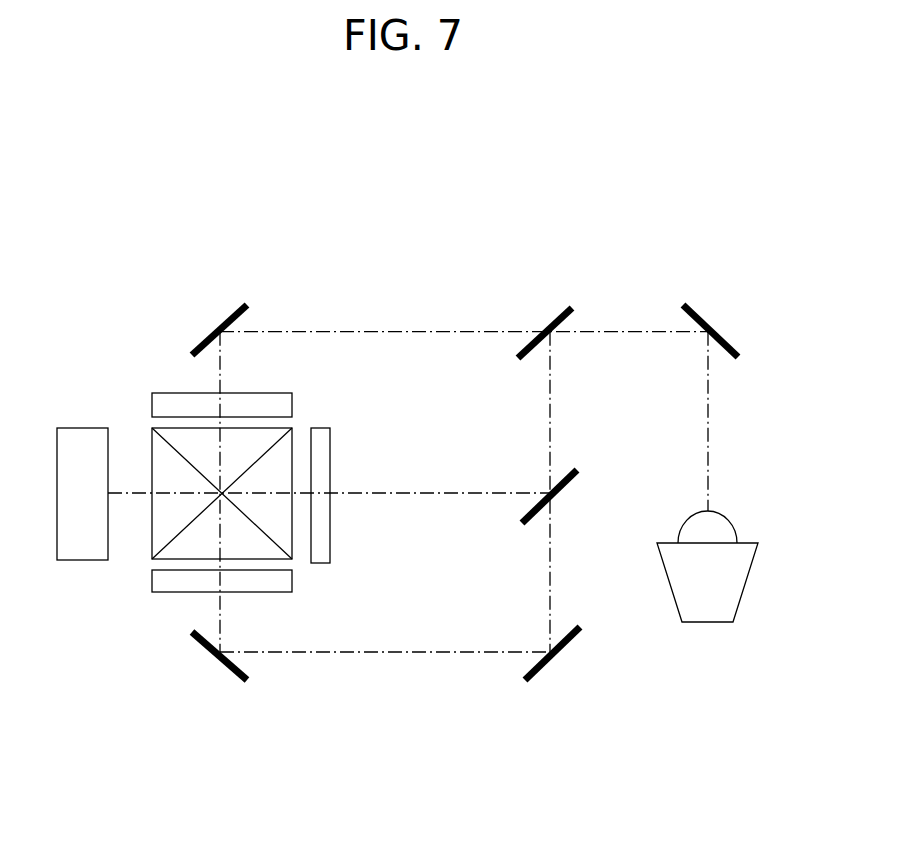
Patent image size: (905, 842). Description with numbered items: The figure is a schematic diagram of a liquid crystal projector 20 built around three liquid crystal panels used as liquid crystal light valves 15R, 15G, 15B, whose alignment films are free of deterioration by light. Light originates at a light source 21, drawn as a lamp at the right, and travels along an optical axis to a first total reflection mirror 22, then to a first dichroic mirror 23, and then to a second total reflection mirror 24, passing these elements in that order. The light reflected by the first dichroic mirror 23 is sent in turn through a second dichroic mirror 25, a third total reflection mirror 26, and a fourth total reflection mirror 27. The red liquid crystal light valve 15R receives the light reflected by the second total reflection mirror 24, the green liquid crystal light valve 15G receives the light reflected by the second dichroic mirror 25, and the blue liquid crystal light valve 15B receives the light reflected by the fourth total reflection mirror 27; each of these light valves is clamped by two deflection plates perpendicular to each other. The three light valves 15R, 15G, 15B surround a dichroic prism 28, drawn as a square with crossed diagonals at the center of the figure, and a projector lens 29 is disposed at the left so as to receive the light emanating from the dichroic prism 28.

The liquid crystal projector 20 is at (260, 213).
The light source 21 is at (747, 588).
The first total reflection mirror 22 is at (706, 315).
The first dichroic mirror 23 is at (552, 317).
The second total reflection mirror 24 is at (230, 312).
The second dichroic mirror 25 is at (565, 485).
The third total reflection mirror 26 is at (567, 647).
The fourth total reflection mirror 27 is at (226, 673).
The dichroic prism 28 is at (291, 427).
The projector lens 29 is at (71, 428).
The red liquid crystal light valve 15R is at (168, 393).
The green liquid crystal light valve 15G is at (330, 548).
The blue liquid crystal light valve 15B is at (173, 593).